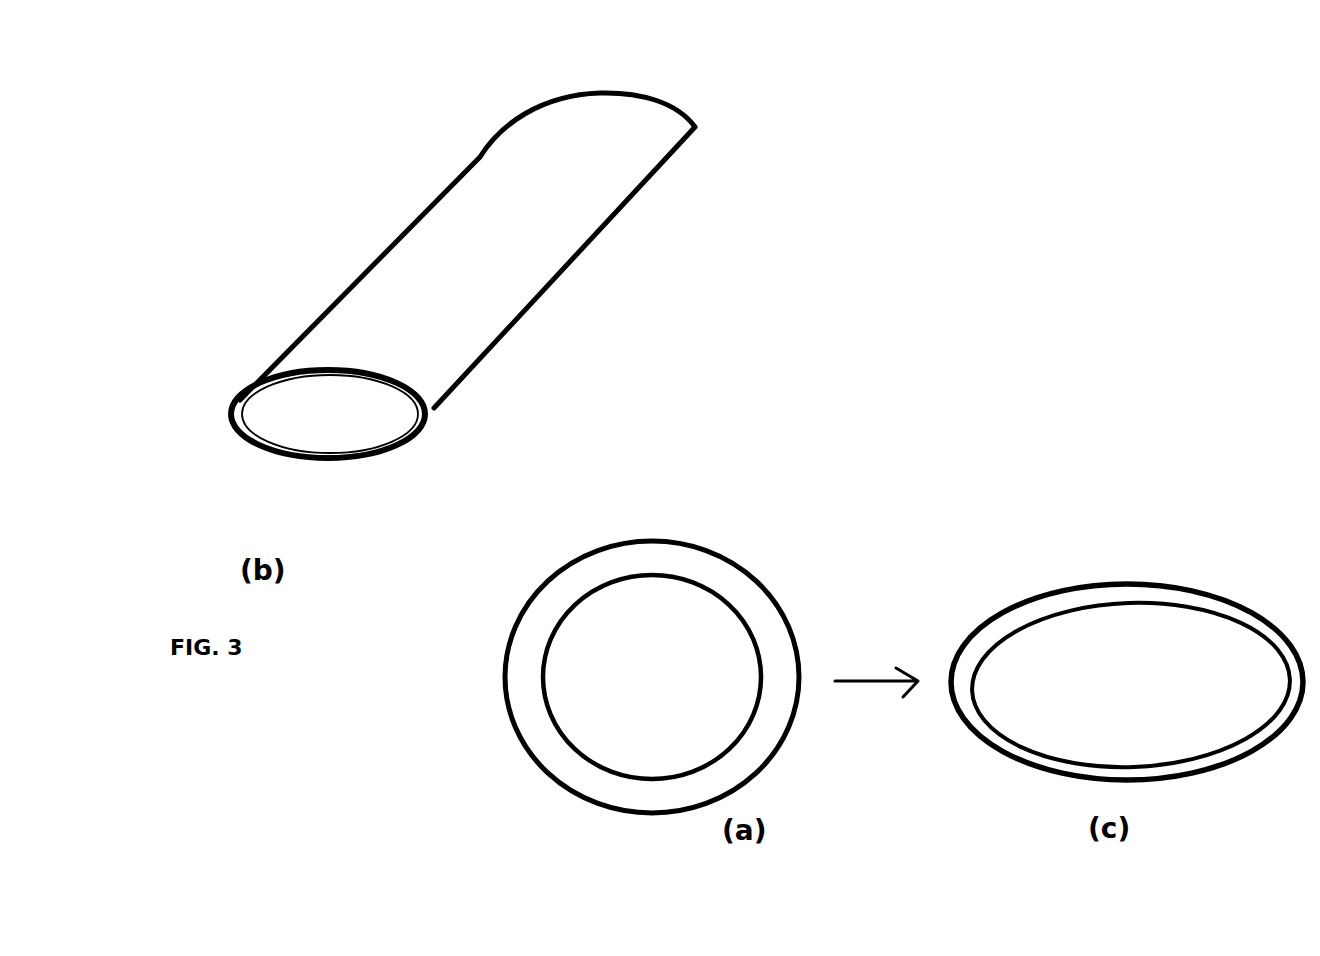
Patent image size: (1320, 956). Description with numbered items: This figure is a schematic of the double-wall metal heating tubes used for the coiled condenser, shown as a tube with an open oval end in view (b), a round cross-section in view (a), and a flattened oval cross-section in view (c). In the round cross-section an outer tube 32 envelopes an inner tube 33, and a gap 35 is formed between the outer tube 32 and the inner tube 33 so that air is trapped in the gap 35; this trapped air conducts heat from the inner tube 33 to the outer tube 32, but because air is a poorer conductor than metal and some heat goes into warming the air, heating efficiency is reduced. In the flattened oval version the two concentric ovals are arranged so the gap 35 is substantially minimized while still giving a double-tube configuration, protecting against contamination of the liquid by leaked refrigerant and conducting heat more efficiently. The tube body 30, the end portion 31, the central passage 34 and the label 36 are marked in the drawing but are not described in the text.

The tubular member 30 is at (587, 290).
The end opening 31 is at (344, 343).
The outer tube 32 is at (228, 430).
The inner tube 33 is at (247, 410).
The lumen 34 is at (355, 418).
The gap 35 is at (795, 600).
The assembly 36 is at (1146, 56).